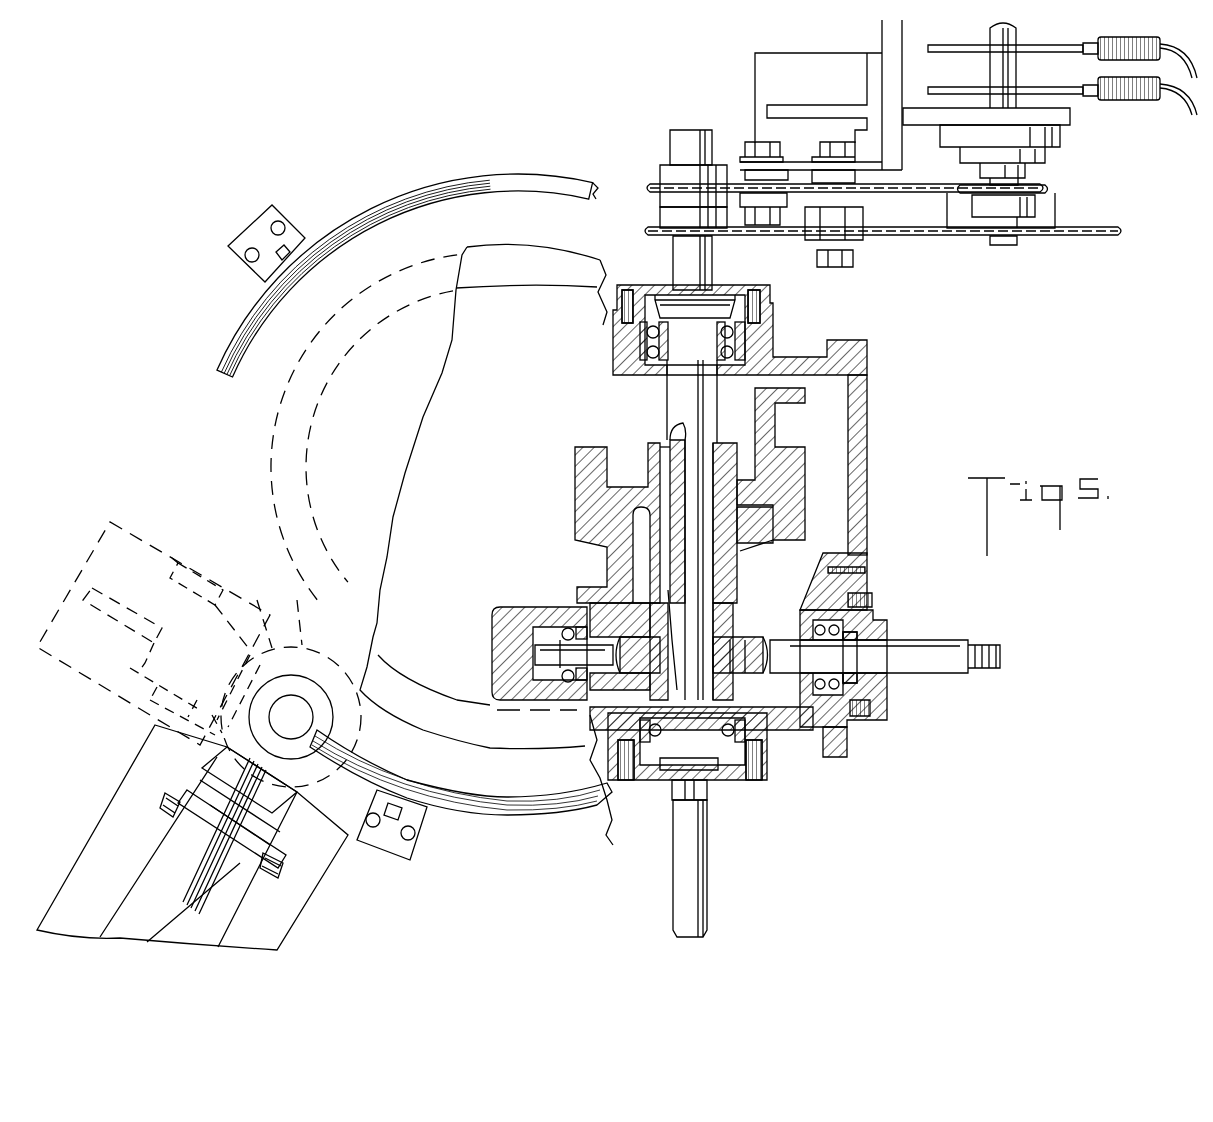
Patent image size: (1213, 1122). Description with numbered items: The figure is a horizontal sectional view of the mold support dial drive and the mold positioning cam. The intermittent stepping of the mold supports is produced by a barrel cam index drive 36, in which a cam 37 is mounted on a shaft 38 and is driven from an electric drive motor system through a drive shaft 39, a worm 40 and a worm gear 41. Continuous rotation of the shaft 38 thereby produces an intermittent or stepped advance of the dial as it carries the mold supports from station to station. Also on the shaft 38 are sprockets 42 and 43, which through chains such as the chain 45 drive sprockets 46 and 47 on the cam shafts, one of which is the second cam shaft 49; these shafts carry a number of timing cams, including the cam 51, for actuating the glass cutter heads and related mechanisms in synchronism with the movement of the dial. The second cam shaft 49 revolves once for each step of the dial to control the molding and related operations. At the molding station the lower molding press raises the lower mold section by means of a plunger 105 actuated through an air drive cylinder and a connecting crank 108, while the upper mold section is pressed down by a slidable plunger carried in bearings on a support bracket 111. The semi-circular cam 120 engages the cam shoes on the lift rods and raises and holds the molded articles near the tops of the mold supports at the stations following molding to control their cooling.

The barrel cam index drive 36 is at (572, 462).
The cam 37 is at (623, 487).
The shaft 38 is at (677, 402).
The drive shaft 39 is at (933, 646).
The worm 40 is at (736, 630).
The worm gear 41 is at (633, 645).
The sprocket 42 is at (651, 233).
The sprocket 43 is at (648, 188).
The chain 45 is at (920, 186).
The sprocket 46 is at (1071, 236).
The sprocket 47 is at (1047, 192).
The cam shaft 49 is at (895, 236).
The cam 51 is at (952, 50).
The plunger 105 is at (287, 700).
The connecting crank 108 is at (183, 887).
The support bracket 111 is at (173, 557).
The semi-circular cam 120 is at (366, 229).